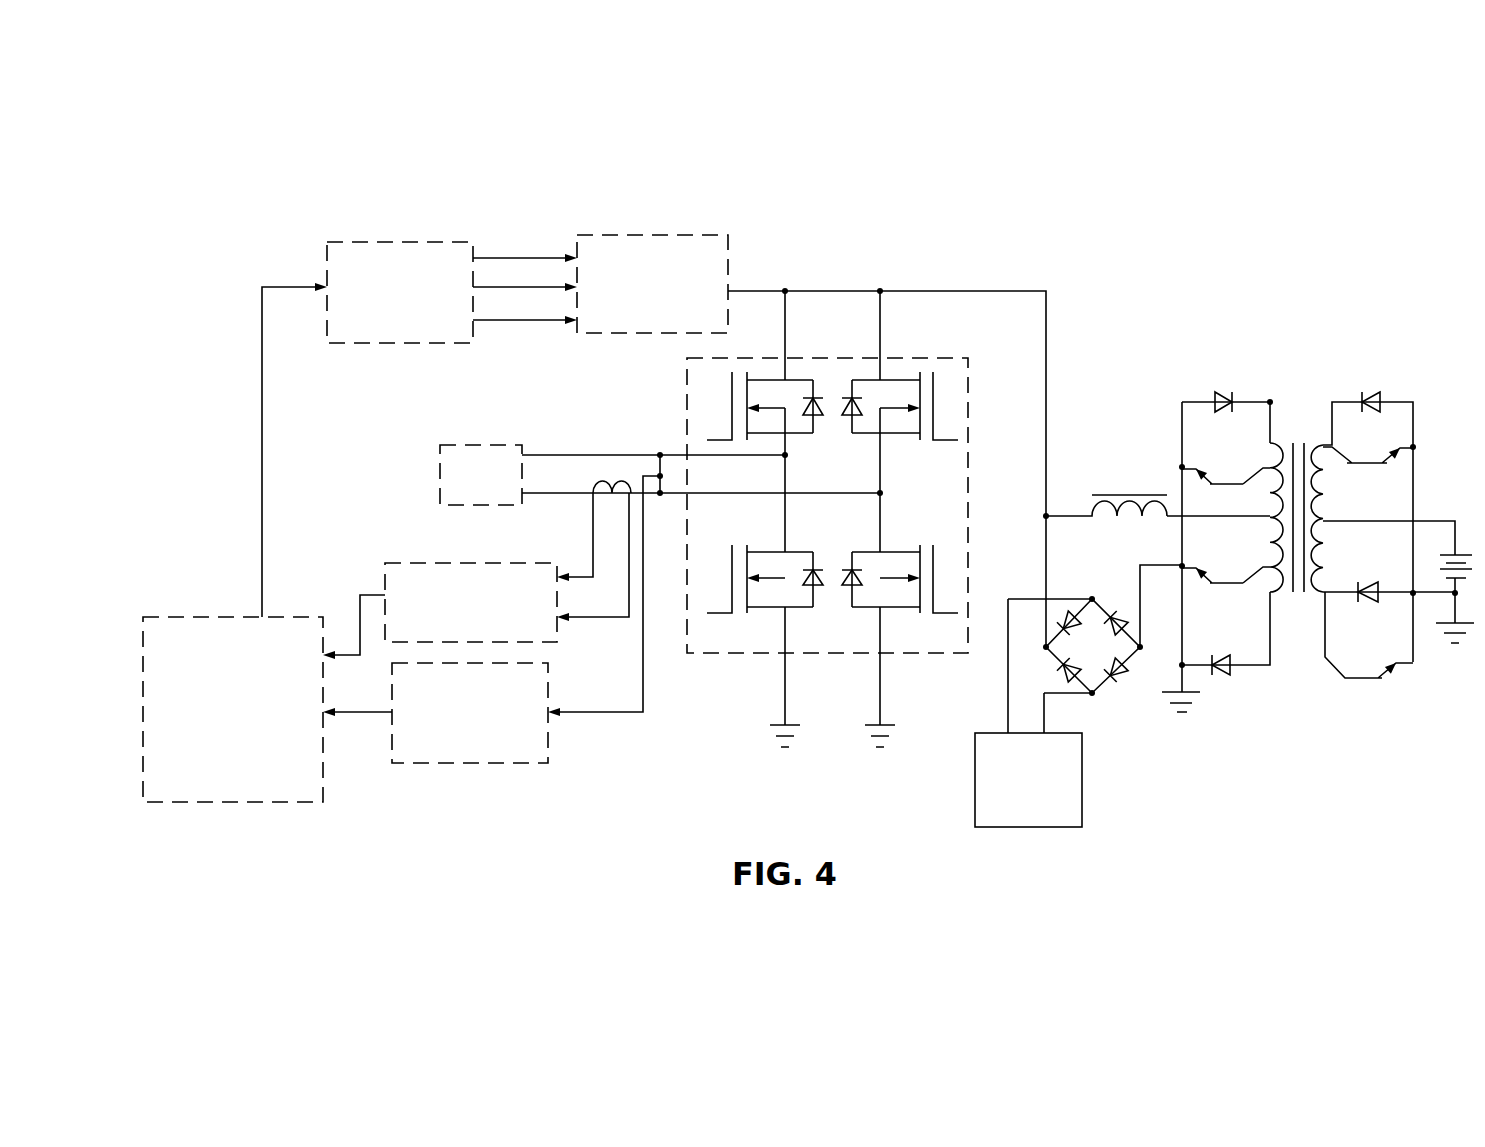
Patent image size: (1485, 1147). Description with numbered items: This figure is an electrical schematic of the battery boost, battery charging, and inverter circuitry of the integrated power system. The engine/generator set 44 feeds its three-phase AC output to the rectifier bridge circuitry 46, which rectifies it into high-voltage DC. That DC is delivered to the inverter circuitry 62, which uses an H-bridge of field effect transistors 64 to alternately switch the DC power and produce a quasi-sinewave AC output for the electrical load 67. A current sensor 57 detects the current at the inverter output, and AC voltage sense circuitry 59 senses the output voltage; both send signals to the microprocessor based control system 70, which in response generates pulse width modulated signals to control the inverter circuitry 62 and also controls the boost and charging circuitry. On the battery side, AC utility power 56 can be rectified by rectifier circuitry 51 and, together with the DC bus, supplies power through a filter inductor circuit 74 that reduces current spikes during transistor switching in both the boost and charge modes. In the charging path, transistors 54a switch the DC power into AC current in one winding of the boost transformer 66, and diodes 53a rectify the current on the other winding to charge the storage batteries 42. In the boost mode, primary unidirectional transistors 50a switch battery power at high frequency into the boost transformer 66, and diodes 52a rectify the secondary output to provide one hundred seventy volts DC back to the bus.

The storage batteries 42 is at (1462, 550).
The engine/generator set 44 is at (398, 238).
The rectifier bridge circuitry 46 is at (662, 233).
The primary unidirectional transistors 50a is at (1365, 472).
The rectifier circuitry 51 is at (1105, 693).
The diodes 52a is at (1223, 390).
The diodes 53a is at (1370, 392).
The transistors 54a is at (1228, 477).
The AC utility power 56 is at (992, 732).
The current sensor 57 is at (417, 563).
The AC voltage sense circuitry 59 is at (508, 765).
The inverter circuitry 62 is at (725, 653).
The field effect transistors 64 is at (807, 443).
The boost transformer 66 is at (1302, 424).
The electrical load 67 is at (482, 445).
The microprocessor based control system 70 is at (293, 615).
The filter inductor circuit 74 is at (1128, 490).